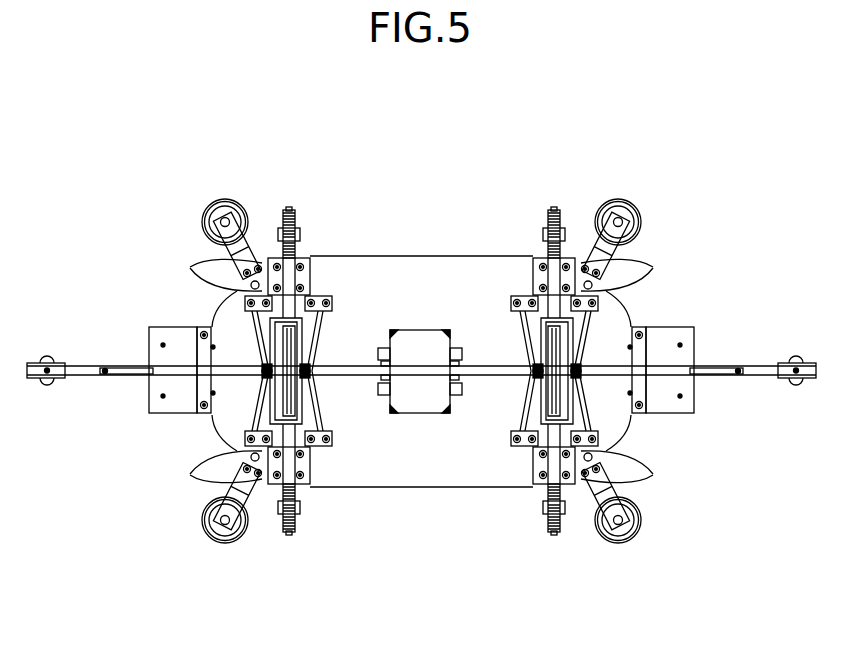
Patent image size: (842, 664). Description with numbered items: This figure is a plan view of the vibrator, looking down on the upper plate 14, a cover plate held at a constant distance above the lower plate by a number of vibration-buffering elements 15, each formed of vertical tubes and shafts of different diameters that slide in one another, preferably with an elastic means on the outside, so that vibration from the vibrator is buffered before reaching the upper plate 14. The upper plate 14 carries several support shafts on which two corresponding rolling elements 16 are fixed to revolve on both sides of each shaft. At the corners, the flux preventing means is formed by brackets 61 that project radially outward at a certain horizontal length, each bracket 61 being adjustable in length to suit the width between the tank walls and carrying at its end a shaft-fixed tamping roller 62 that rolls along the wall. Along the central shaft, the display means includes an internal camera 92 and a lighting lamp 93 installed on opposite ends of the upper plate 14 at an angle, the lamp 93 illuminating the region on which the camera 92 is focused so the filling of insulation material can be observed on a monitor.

The upper plate 14 is at (407, 458).
The vibration-buffering element 15 is at (305, 272).
The rolling element 16 is at (283, 400).
The bracket 61 is at (192, 268).
The tamping roller 62 is at (284, 226).
The internal camera 92 is at (47, 380).
The lighting lamp 93 is at (794, 380).